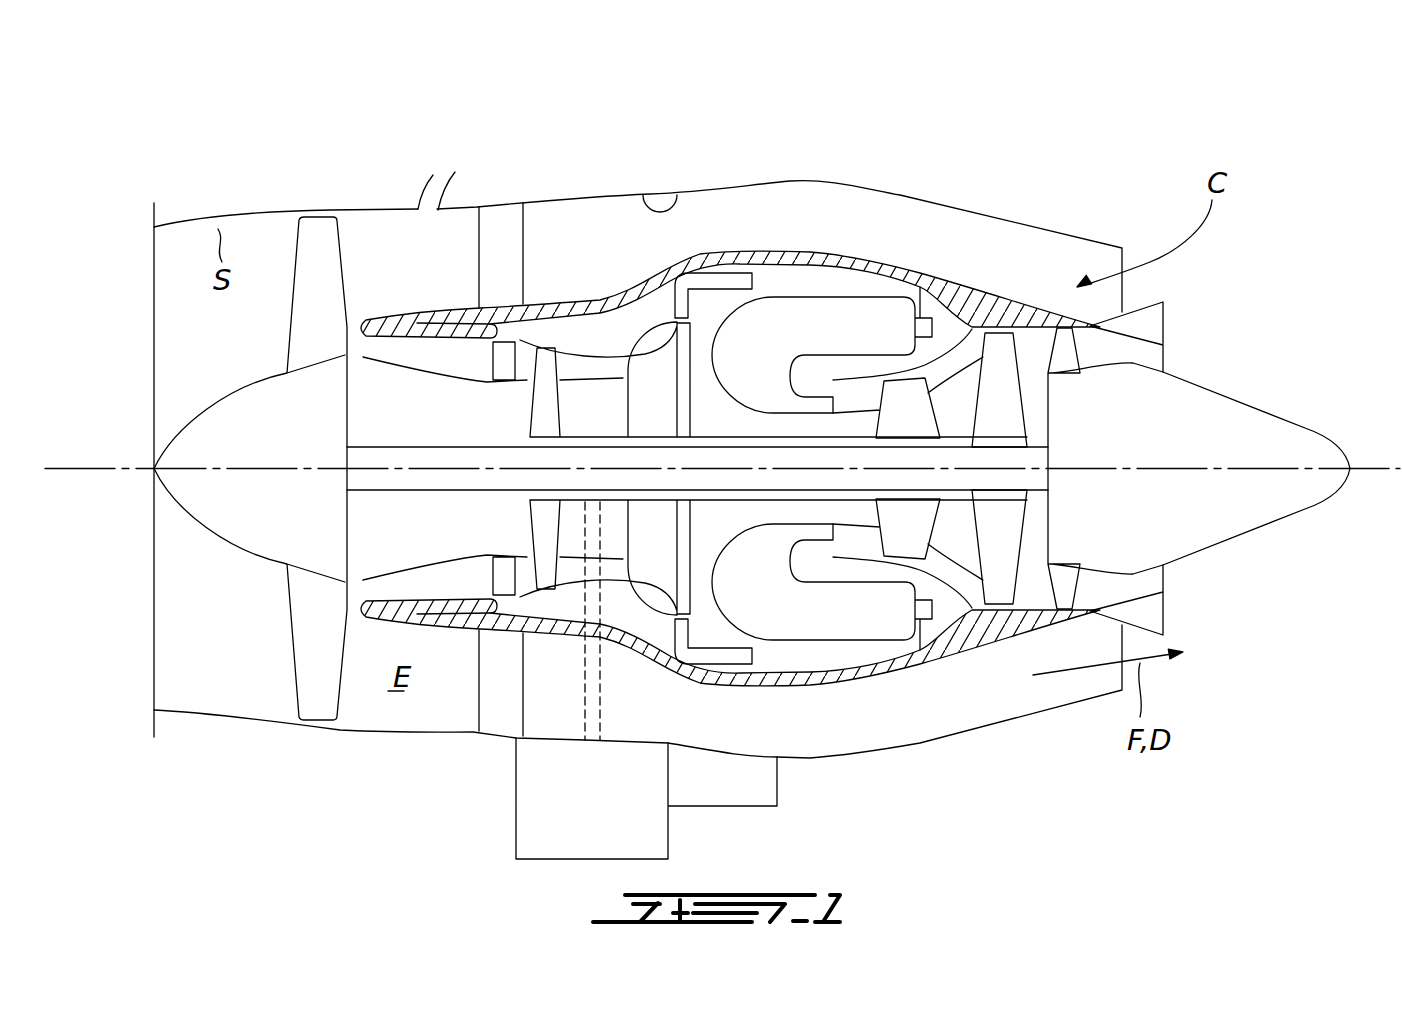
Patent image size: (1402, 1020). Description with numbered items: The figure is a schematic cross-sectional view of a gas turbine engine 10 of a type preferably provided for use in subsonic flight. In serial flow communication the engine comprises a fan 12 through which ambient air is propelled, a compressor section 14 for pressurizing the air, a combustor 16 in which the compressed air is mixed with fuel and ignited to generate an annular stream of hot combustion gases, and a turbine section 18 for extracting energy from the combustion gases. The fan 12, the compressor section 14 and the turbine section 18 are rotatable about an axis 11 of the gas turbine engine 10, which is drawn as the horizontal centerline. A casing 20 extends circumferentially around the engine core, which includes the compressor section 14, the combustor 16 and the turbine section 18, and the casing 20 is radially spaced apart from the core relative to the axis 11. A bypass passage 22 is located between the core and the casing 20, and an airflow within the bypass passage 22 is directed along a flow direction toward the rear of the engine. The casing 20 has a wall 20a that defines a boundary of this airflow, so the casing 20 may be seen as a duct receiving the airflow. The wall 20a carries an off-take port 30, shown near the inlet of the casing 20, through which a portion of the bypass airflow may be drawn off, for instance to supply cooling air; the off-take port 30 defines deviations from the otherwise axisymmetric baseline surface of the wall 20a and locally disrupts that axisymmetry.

The gas turbine engine 10 is at (972, 135).
The axis 11 is at (1392, 468).
The fan 12 is at (303, 632).
The compressor section 14 is at (580, 362).
The combustor 16 is at (813, 318).
The turbine section 18 is at (953, 540).
The casing 20 is at (1040, 225).
The wall 20a is at (676, 193).
The bypass passage 22 is at (945, 252).
The off-take port 30 is at (402, 186).